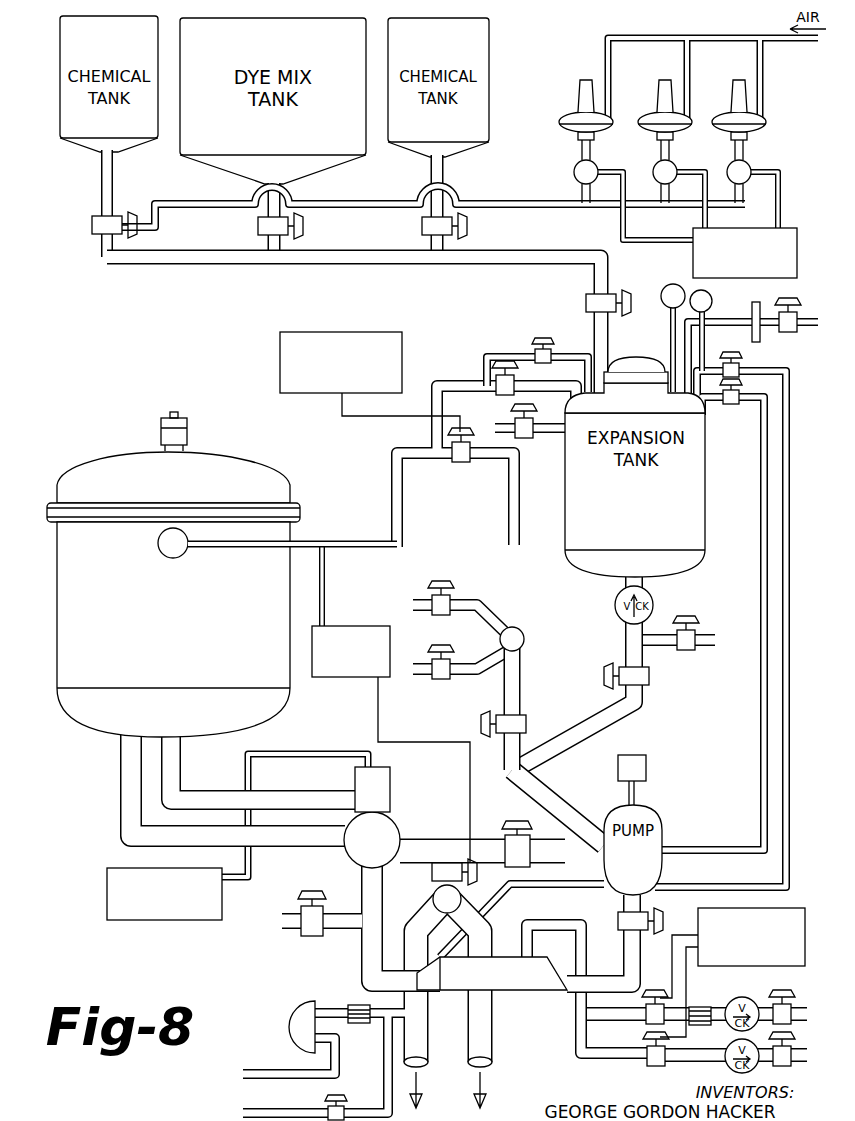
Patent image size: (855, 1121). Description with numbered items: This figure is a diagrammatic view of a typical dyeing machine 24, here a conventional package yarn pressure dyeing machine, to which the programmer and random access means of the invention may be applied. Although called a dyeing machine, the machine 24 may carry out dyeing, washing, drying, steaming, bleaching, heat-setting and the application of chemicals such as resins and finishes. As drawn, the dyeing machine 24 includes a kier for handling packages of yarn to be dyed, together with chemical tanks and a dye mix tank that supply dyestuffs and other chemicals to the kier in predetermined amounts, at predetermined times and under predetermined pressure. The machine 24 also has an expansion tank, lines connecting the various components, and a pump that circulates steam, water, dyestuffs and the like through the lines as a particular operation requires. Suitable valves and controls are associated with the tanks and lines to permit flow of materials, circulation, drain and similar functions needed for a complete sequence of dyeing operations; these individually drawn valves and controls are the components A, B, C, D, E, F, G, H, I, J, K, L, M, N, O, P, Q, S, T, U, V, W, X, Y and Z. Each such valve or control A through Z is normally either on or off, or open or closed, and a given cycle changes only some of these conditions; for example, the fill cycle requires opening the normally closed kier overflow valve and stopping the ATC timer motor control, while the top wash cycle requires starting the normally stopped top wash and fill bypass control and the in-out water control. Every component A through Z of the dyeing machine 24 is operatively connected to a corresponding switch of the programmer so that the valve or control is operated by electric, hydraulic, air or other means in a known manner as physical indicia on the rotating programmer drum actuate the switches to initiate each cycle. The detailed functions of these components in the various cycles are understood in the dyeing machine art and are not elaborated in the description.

The dyeing machine 24 is at (158, 386).
The valve or control A is at (461, 464).
The valve or control B is at (508, 837).
The valve or control C is at (280, 348).
The valve or control D is at (650, 678).
The valve or control E is at (800, 908).
The valve or control F is at (796, 332).
The valve or control G is at (665, 287).
The valve or control H is at (497, 392).
The valve or control I is at (431, 873).
The valve or control J is at (93, 228).
The valve or control K is at (259, 228).
The valve or control L is at (422, 233).
The valve or control M is at (568, 130).
The valve or control N is at (651, 131).
The valve or control O is at (723, 133).
The valve or control P is at (210, 920).
The valve or control Q is at (618, 914).
The valve or control S is at (797, 251).
The valve or control T is at (452, 597).
The valve or control U is at (444, 683).
The valve or control V is at (532, 441).
The valve or control W is at (323, 678).
The valve or control X is at (692, 656).
The valve or control Y is at (310, 938).
The valve or control Z is at (646, 768).